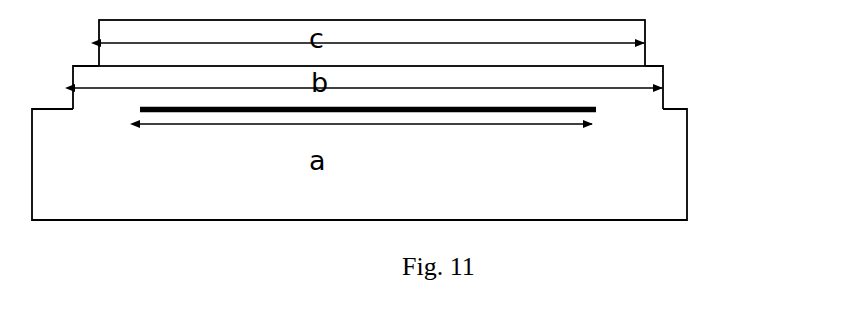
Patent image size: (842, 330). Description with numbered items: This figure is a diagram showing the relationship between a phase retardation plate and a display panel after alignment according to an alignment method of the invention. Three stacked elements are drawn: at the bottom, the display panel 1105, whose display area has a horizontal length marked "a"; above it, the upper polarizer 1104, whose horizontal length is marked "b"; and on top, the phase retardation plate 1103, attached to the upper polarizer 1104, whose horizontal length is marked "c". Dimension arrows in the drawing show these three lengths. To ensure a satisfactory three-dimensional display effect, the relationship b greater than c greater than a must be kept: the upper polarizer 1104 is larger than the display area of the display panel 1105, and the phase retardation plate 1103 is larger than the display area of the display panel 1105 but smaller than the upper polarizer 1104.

The phase retardation plate 1103 is at (630, 32).
The upper polarizer 1104 is at (663, 88).
The display panel 1105 is at (675, 177).